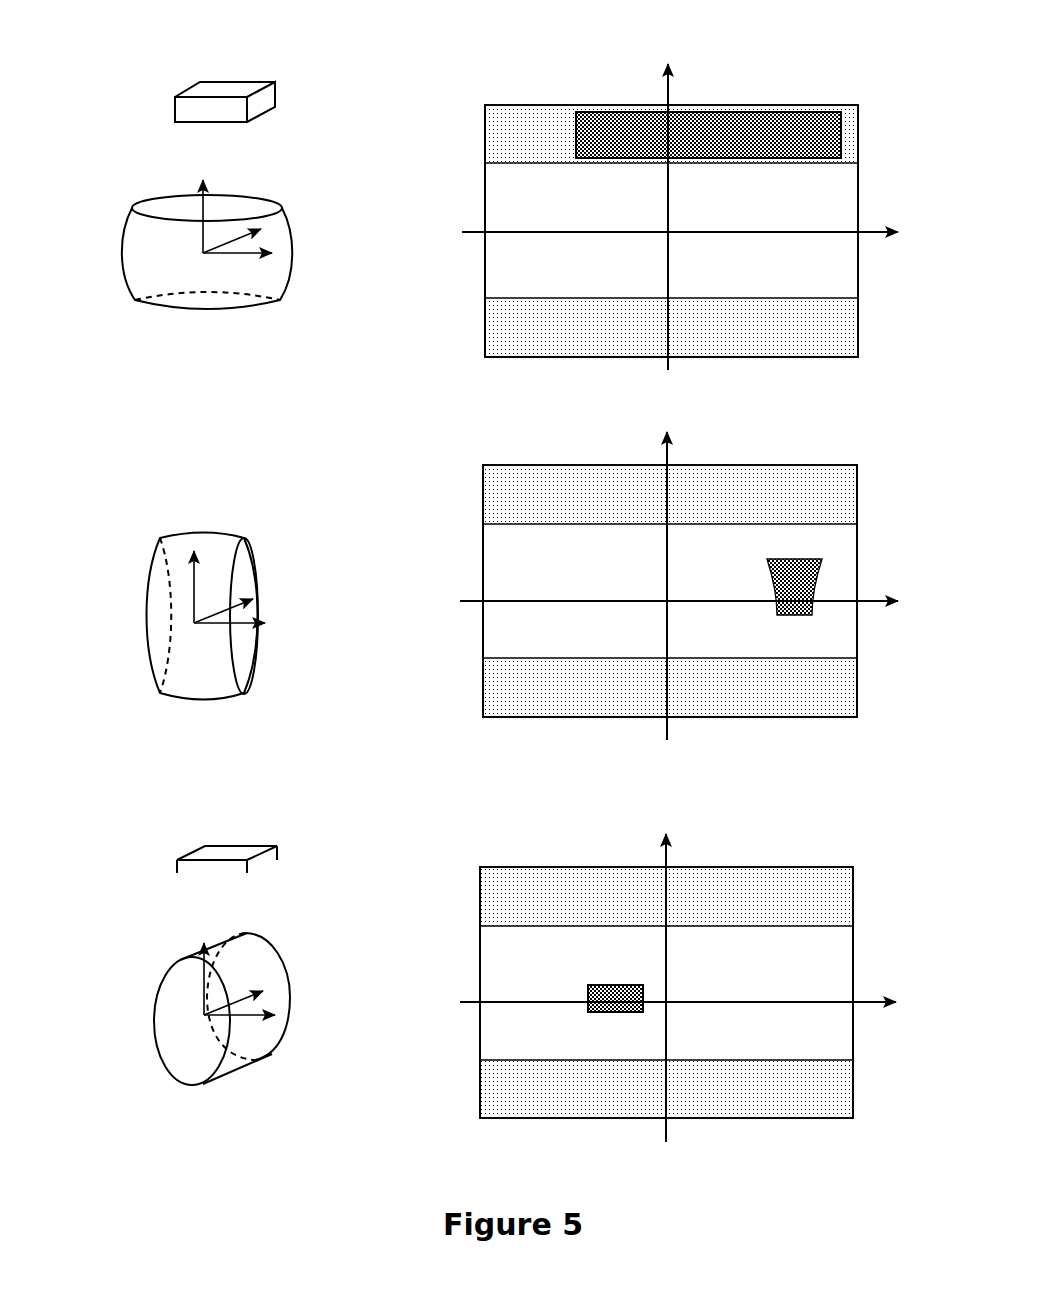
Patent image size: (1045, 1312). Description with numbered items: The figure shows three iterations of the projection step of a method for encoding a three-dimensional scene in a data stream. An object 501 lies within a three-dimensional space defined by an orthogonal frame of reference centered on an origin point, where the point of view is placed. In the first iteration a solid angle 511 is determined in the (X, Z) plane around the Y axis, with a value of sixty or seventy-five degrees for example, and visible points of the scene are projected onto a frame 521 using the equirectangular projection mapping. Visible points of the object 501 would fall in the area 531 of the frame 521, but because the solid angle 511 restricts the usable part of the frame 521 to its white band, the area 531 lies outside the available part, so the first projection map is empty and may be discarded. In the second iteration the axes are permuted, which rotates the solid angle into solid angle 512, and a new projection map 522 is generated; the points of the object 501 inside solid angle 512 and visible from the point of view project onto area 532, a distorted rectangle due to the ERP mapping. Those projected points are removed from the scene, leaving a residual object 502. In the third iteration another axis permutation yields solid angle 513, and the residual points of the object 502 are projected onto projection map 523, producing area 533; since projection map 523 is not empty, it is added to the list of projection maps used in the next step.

The object 501 is at (176, 84).
The residual object 502 is at (176, 846).
The solid angle 511 is at (120, 246).
The solid angle 512 is at (135, 603).
The solid angle 513 is at (148, 1018).
The frame 521 is at (866, 192).
The projection map 522 is at (864, 548).
The projection map 523 is at (864, 943).
The area 531 is at (690, 130).
The area 532 is at (798, 553).
The area 533 is at (603, 978).